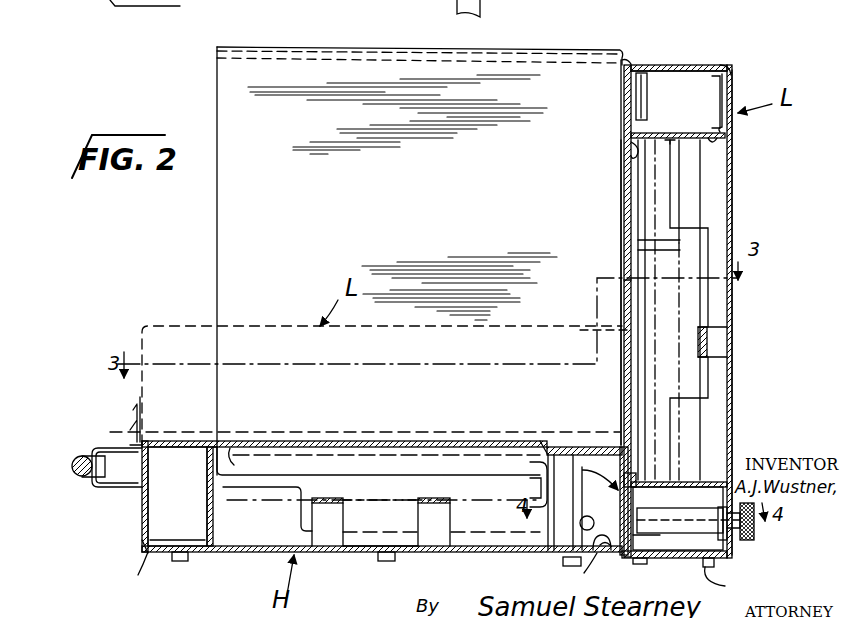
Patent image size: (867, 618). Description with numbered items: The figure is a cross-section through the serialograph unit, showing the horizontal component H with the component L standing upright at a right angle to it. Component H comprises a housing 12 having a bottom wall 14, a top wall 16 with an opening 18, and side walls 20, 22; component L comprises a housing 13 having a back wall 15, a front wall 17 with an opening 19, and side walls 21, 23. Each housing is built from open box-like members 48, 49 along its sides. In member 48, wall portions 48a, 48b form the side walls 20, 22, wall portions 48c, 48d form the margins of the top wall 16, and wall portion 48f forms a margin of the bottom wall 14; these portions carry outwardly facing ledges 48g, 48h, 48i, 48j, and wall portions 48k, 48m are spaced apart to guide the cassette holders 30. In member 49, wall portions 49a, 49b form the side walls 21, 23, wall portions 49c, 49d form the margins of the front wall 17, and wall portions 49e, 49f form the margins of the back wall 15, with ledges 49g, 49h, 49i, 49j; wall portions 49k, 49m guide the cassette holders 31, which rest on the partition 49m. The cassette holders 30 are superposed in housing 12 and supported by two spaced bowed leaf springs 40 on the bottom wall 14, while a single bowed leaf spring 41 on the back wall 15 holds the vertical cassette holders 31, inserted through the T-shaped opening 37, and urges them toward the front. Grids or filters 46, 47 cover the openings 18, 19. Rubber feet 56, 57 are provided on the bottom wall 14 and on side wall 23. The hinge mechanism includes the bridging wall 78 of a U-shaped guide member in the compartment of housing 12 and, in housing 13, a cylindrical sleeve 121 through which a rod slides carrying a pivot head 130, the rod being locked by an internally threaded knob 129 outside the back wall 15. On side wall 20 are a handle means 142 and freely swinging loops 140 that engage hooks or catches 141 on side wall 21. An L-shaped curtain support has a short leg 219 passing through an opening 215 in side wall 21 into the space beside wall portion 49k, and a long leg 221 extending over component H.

The long leg 221 is at (215, 49).
The opening 215 is at (652, 65).
The side wall 21 is at (686, 67).
The wall portion 49a is at (716, 64).
The open box-like member 49 is at (734, 70).
The wall portion 49e is at (734, 78).
The wall portion 49c is at (634, 86).
The short leg 219 is at (639, 102).
The ledge 49i is at (720, 82).
The wall portion 49k is at (734, 141).
The back wall 15 is at (736, 159).
The ledge 49g is at (630, 161).
The opening 19 is at (628, 181).
The housing 13 is at (712, 205).
The front wall 17 is at (627, 206).
The T-shaped opening 37 is at (690, 226).
The cassette holder 31 is at (652, 262).
The bowed leaf spring 41 is at (705, 340).
The grid or filter 47 is at (625, 287).
The ledge 49h is at (644, 472).
The wall portion 49m is at (715, 479).
The wall portion 48b is at (678, 517).
The cylindrical sleeve 121 is at (688, 522).
The internally threaded knob 129 is at (758, 520).
The wall portion 49f is at (734, 541).
The wall portion 49d is at (635, 540).
The wall portion 49b is at (658, 560).
The side wall 23 is at (690, 558).
The ledge 49j is at (716, 566).
The rubber foot 57 is at (726, 586).
The housing 12 is at (228, 554).
The bottom wall 14 is at (362, 555).
The side wall 20 is at (141, 516).
The open box-like member 48 is at (158, 494).
The ledge 48i is at (163, 542).
The wall portion 48k is at (214, 505).
The wall portion 48a is at (146, 543).
The rubber foot 56 is at (181, 563).
The opening 18 is at (302, 448).
The top wall 16 is at (337, 442).
The cassette holder 30 is at (393, 490).
The bowed leaf spring 40 is at (427, 511).
The grid or filter 46 is at (443, 445).
The bridging wall 78 is at (538, 442).
The ledge 48h is at (530, 462).
The wall portion 48m is at (551, 521).
The wall portion 48d is at (612, 446).
The side wall 22 is at (582, 455).
The pivot head 130 is at (580, 525).
The ledge 48j is at (575, 567).
The wall portion 48f is at (600, 576).
The wall portion 48c is at (191, 441).
The ledge 48g is at (258, 443).
The handle means 142 is at (78, 460).
The hook or catch 141 is at (133, 412).
The freely swinging loop 140 is at (140, 435).